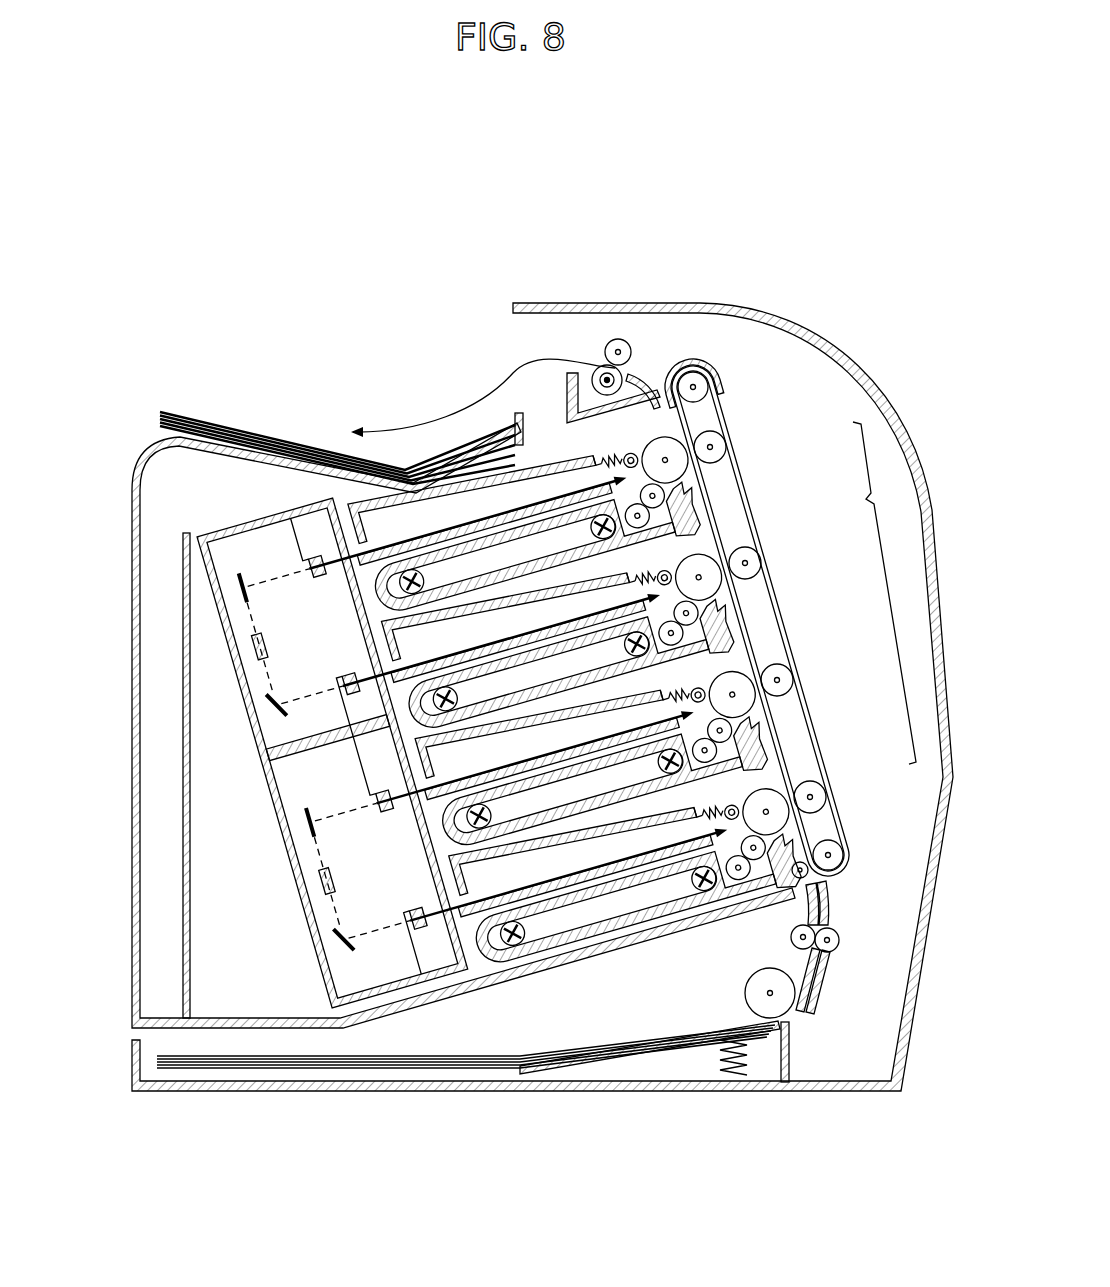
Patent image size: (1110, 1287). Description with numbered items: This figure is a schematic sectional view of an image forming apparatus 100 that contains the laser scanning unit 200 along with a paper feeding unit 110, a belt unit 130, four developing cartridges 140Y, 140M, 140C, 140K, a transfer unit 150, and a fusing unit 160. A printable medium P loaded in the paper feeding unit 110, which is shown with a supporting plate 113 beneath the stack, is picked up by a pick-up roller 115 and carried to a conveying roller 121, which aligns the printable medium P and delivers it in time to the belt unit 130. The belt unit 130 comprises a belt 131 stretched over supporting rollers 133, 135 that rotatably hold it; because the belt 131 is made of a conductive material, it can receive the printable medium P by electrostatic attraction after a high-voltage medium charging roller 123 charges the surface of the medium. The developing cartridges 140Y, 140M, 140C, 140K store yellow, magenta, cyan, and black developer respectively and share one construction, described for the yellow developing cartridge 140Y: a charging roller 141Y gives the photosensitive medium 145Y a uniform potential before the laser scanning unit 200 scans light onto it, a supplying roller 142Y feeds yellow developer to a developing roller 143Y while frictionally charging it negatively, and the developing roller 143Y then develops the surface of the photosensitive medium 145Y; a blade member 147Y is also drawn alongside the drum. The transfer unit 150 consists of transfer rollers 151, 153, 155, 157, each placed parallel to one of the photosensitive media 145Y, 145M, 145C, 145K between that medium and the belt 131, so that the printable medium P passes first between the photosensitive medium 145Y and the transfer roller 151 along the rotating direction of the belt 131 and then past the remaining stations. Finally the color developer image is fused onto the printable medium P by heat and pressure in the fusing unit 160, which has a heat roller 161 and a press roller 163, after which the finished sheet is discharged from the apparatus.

The image forming apparatus 100 is at (822, 285).
The paper feeding unit 110 is at (797, 1054).
The knock-up plate 113 is at (769, 1042).
The pick-up roller 115 is at (786, 1005).
The conveying roller 121 is at (838, 946).
The medium charging roller 123 is at (820, 885).
The belt unit 130 is at (757, 518).
The belt 131 is at (790, 633).
The supporting roller 133 is at (843, 857).
The supporting roller 135 is at (711, 378).
The black developing cartridge 140K is at (377, 591).
The cyan developing cartridge 140C is at (410, 719).
The magenta developing cartridge 140M is at (443, 828).
The yellow developing cartridge 140Y is at (484, 947).
The charging roller 141Y is at (740, 814).
The supplying roller 142Y is at (735, 878).
The developing roller 143Y is at (755, 857).
The black photosensitive medium 145K is at (686, 462).
The cyan photosensitive medium 145C is at (720, 585).
The magenta photosensitive medium 145M is at (752, 705).
The yellow photosensitive medium 145Y is at (786, 818).
The cleaning blade 147Y is at (770, 782).
The transfer unit 150 is at (886, 593).
The transfer roller 151 is at (824, 796).
The transfer roller 153 is at (790, 680).
The transfer roller 155 is at (757, 565).
The transfer roller 157 is at (722, 447).
The fusing unit 160 is at (601, 359).
The heat roller 161 is at (592, 393).
The press roller 163 is at (620, 340).
The laser scanning unit 200 is at (275, 808).
The printable medium P is at (628, 1036).